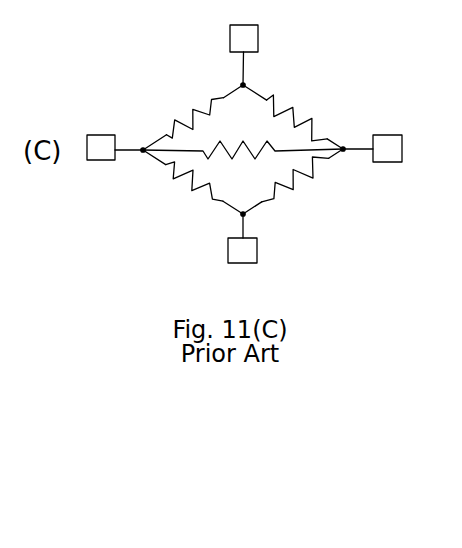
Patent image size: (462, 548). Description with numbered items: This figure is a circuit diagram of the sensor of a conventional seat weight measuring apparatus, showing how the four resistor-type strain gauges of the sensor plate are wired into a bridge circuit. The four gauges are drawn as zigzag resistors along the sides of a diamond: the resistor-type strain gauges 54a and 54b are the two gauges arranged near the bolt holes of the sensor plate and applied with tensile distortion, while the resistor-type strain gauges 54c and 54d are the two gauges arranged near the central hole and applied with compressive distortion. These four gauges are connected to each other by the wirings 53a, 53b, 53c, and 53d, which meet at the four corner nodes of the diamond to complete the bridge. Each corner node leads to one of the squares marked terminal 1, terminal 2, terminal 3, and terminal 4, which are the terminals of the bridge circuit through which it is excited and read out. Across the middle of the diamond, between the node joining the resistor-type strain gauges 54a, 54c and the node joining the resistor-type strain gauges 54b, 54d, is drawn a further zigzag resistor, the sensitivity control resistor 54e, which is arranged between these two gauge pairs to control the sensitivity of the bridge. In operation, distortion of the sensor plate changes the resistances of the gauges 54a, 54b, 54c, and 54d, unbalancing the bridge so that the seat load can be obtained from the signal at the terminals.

The terminal 1 is at (115, 147).
The terminal 2 is at (244, 55).
The terminal 3 is at (372, 148).
The terminal 4 is at (242, 238).
The wiring 53a is at (155, 142).
The wiring 53b is at (222, 98).
The wiring 53c is at (329, 136).
The wiring 53d is at (252, 207).
The resistor-type strain gauge 54a is at (195, 104).
The resistor-type strain gauge 54b is at (293, 189).
The resistor-type strain gauge 54c is at (209, 184).
The resistor-type strain gauge 54d is at (294, 108).
The sensitivity control resistor 54e is at (205, 156).